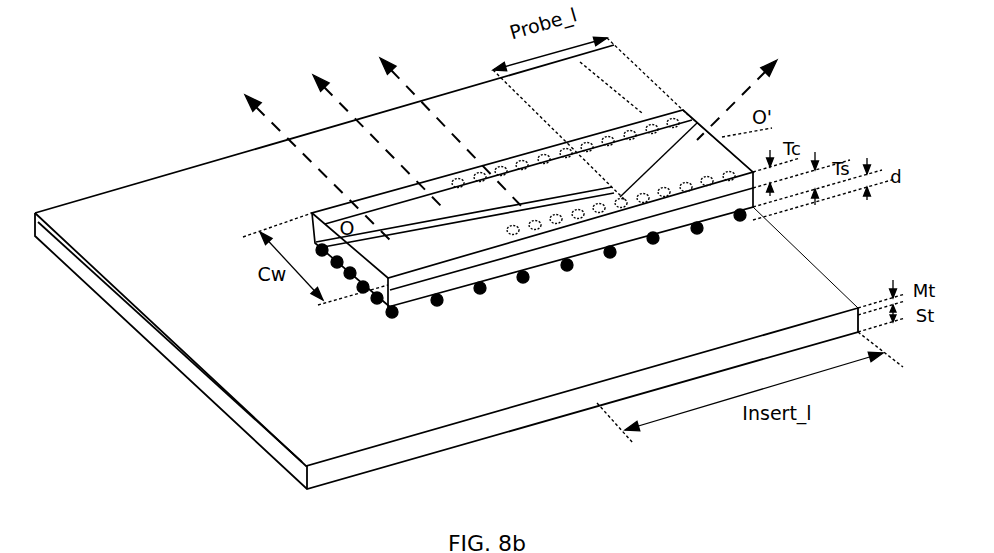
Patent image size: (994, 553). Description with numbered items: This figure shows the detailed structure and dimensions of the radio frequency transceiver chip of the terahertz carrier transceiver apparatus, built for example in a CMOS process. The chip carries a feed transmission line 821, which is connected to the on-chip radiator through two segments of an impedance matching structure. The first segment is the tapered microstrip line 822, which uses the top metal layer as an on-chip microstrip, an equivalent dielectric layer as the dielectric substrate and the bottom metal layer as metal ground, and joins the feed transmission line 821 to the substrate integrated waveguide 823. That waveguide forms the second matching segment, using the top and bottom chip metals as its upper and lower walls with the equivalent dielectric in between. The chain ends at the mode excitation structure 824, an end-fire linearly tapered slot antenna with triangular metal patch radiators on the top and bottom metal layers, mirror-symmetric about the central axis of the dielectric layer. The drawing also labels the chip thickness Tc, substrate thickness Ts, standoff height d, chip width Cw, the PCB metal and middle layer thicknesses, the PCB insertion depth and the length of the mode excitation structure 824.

The feed transmission line 821 is at (304, 152).
The tapered microstrip line 822 is at (363, 127).
The substrate integrated waveguide 823 is at (442, 119).
The mode excitation structure 824 is at (752, 84).